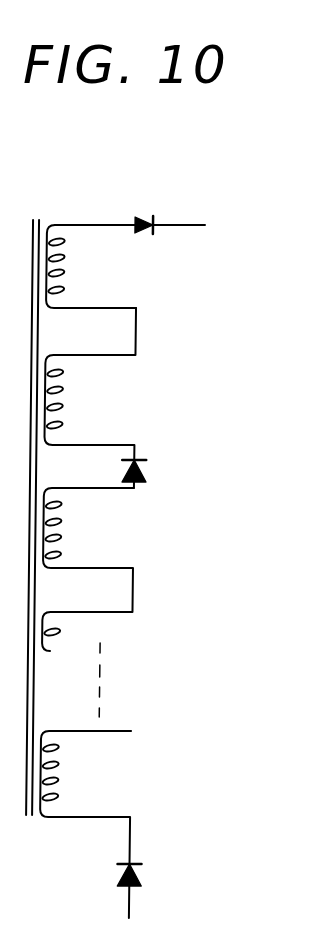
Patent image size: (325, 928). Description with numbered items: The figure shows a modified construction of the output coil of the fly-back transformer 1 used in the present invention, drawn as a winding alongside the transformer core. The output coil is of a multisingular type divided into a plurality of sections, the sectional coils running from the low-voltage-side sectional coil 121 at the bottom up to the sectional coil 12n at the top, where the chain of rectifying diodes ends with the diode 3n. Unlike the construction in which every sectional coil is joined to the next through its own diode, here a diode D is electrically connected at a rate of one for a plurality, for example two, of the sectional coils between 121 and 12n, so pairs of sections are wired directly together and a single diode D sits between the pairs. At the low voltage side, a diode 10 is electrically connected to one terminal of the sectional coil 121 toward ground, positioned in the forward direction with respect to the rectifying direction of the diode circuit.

The fly-back transformer 1 is at (50, 198).
The diode 3n is at (142, 214).
The sectional coil 12n is at (65, 273).
The diode D is at (148, 470).
The sectional coil 121 is at (62, 765).
The diode 10 is at (142, 872).